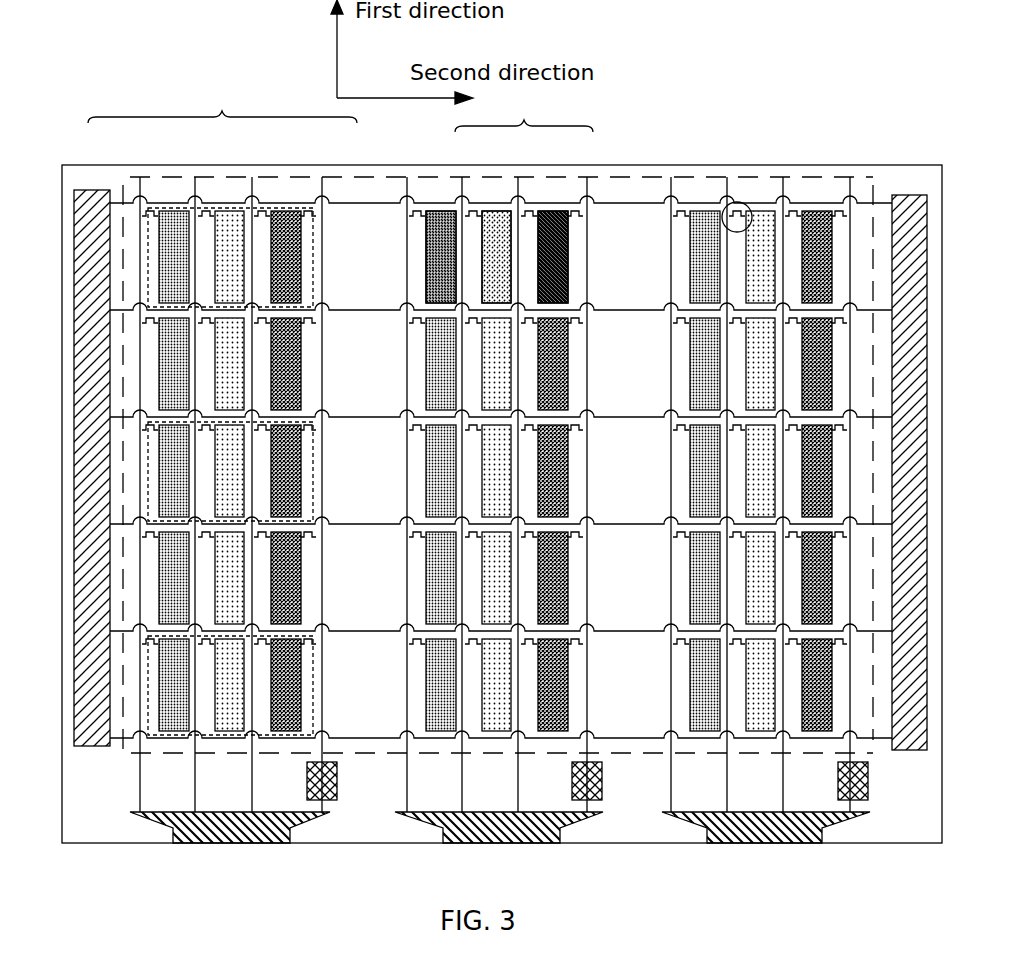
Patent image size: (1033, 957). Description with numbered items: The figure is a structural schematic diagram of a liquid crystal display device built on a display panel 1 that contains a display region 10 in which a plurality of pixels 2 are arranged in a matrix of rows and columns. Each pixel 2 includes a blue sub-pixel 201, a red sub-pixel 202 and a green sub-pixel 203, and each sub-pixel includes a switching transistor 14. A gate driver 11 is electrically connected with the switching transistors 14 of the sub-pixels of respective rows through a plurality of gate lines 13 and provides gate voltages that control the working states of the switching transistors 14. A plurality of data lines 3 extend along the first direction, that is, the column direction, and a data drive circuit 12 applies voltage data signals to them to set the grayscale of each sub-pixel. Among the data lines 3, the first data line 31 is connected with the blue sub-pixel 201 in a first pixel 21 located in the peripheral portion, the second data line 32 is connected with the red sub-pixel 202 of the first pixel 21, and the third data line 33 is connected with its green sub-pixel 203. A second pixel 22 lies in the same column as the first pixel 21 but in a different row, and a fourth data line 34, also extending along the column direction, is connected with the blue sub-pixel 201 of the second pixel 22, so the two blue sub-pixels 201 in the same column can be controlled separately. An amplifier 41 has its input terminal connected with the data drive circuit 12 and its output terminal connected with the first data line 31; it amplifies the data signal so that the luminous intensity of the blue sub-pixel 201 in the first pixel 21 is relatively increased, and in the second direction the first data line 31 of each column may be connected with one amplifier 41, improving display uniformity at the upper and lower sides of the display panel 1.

The display panel 1 is at (877, 845).
The pixel 2 is at (524, 113).
The data line 3 is at (222, 105).
The display region 10 is at (727, 195).
The gate driver 11 is at (908, 195).
The data drive circuit 12 is at (747, 845).
The gate line 13 is at (613, 738).
The switching transistor 14 is at (741, 203).
The first pixel 21 is at (150, 268).
The second pixel 22 is at (150, 470).
The first data line 31 is at (320, 188).
The second data line 32 is at (195, 188).
The third data line 33 is at (140, 188).
The fourth data line 34 is at (252, 188).
The amplifier 41 is at (325, 788).
The blue sub-pixel 201 is at (558, 215).
The red sub-pixel 202 is at (493, 215).
The green sub-pixel 203 is at (431, 215).